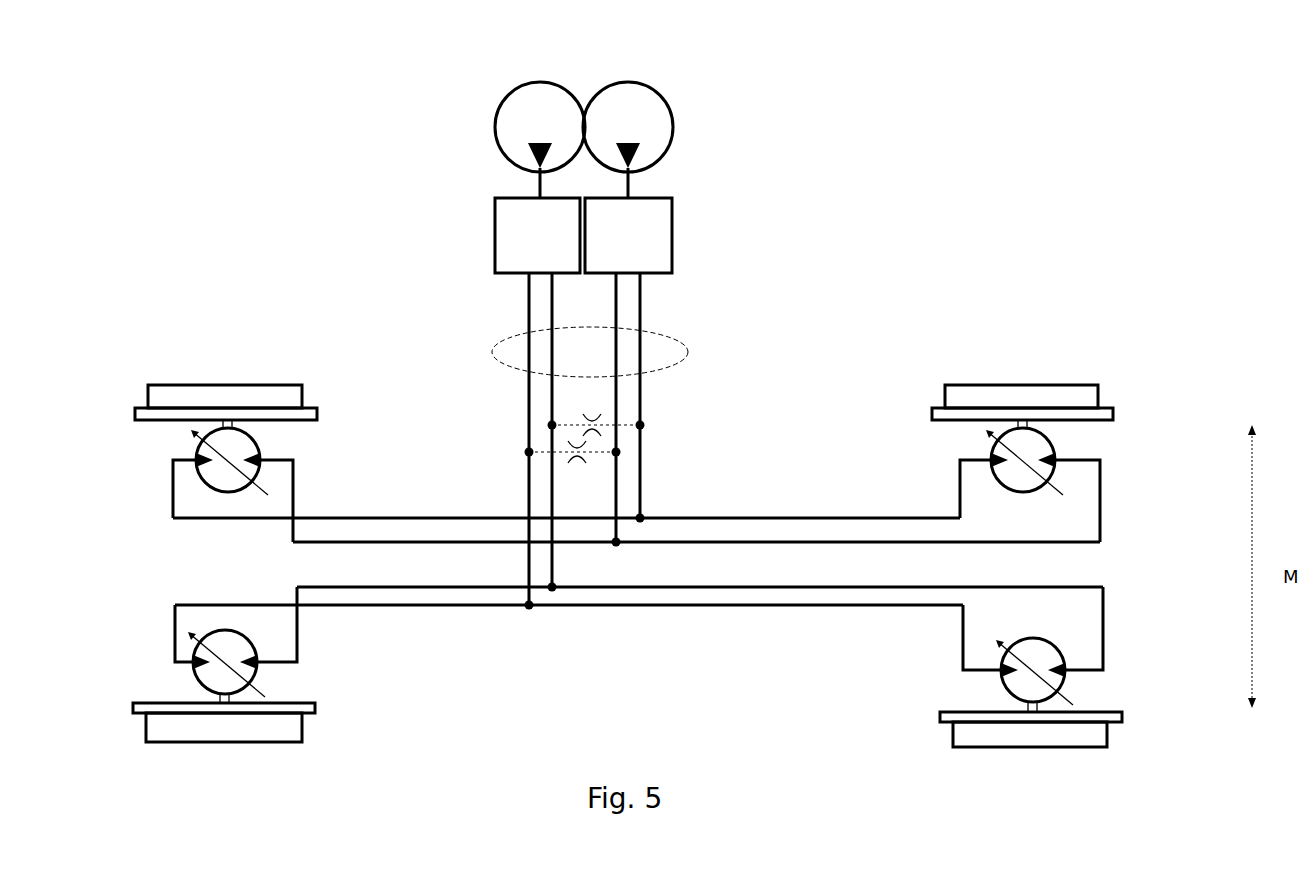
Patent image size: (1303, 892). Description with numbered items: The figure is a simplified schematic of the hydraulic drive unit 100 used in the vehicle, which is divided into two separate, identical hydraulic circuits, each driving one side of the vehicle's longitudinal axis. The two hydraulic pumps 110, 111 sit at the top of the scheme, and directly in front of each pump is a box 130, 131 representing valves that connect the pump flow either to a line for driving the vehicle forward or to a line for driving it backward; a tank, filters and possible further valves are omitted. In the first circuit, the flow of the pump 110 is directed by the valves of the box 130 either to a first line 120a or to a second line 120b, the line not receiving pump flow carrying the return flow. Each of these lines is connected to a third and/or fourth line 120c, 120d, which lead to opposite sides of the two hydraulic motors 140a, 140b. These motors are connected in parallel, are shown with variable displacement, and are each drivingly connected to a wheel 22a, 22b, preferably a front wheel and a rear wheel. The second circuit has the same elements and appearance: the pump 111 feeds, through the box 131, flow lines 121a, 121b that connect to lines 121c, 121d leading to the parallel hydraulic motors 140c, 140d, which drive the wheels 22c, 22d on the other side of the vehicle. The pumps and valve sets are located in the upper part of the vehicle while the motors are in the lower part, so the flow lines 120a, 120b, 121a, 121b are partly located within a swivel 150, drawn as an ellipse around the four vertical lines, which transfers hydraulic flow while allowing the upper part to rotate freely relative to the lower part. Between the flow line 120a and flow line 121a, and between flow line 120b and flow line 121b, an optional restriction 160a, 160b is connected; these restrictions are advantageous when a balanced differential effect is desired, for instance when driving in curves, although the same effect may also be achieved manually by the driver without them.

The drive unit 100 is at (946, 116).
The hydraulic pump 110 is at (673, 116).
The hydraulic pump 111 is at (497, 125).
The box of valves 130 is at (672, 242).
The box of valves 131 is at (495, 240).
The first line 120a is at (618, 320).
The second line 120b is at (643, 295).
The third line 120c is at (445, 542).
The fourth line 120d is at (365, 518).
The flow line 121a is at (552, 322).
The flow line 121b is at (529, 290).
The third line 121c is at (438, 590).
The fourth line 121d is at (375, 608).
The swivel 150 is at (525, 375).
The restriction 160a is at (608, 428).
The restriction 160b is at (563, 455).
The hydraulic motor 140a is at (1057, 452).
The hydraulic motor 140b is at (200, 440).
The hydraulic motor 140c is at (1065, 682).
The hydraulic motor 140d is at (193, 665).
The wheel 22a is at (1018, 385).
The wheel 22b is at (230, 385).
The wheel 22c is at (1035, 747).
The wheel 22d is at (225, 742).